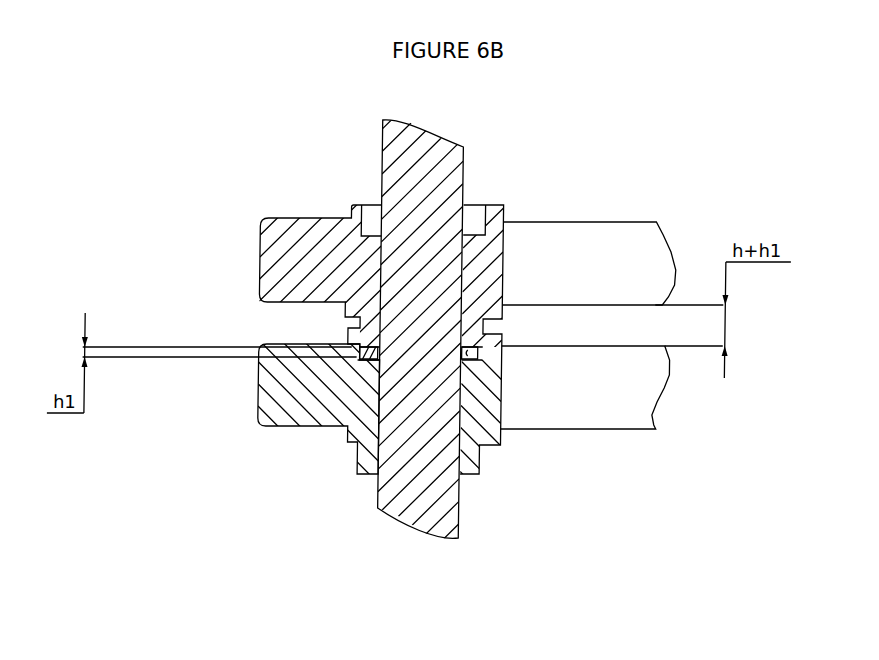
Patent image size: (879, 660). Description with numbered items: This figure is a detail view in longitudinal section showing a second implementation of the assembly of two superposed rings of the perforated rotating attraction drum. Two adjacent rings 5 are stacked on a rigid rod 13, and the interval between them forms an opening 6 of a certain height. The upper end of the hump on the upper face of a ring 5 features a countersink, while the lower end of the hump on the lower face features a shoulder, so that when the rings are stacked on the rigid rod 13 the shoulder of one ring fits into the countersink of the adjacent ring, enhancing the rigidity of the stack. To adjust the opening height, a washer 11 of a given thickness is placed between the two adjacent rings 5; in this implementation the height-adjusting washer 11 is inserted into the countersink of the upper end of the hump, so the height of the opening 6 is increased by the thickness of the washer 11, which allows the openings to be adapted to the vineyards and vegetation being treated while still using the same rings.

The ring 5 is at (302, 255).
The opening 6 is at (246, 318).
The washer 11 is at (496, 390).
The rigid rod 13 is at (418, 490).